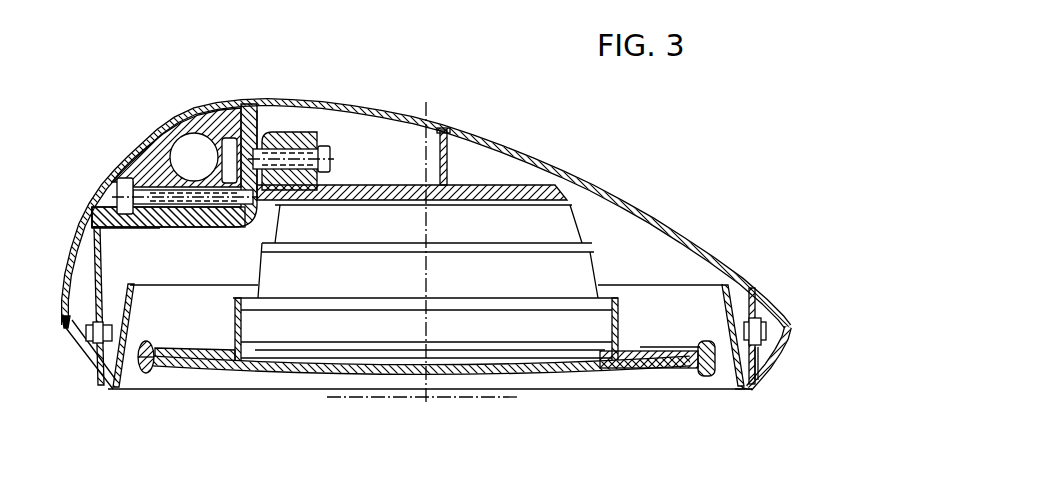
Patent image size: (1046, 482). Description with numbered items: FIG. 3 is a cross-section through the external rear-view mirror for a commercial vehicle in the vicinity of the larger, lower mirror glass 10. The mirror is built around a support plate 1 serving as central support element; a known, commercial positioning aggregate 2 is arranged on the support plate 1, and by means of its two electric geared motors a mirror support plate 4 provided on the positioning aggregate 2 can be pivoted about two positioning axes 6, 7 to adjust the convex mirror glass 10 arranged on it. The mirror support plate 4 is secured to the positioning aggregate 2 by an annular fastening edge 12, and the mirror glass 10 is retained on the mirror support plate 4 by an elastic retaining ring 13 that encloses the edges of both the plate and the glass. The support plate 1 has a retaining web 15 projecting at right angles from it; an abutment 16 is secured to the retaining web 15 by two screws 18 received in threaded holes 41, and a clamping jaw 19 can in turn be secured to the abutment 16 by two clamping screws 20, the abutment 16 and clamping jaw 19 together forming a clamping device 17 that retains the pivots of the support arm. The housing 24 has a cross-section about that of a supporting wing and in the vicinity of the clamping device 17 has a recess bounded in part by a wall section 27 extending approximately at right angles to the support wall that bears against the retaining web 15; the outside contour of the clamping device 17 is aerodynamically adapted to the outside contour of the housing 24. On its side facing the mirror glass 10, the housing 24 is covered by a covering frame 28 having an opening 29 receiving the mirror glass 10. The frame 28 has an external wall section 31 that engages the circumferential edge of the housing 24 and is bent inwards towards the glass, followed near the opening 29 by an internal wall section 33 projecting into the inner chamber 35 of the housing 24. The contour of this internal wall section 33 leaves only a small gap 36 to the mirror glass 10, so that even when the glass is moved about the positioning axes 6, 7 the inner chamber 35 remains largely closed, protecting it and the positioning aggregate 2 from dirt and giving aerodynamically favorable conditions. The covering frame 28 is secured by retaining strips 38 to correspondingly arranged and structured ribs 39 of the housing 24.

The support plate 1 is at (487, 192).
The positioning aggregate 2 is at (525, 289).
The mirror support plate 4 is at (685, 355).
The positioning axis 6 is at (427, 397).
The positioning axis 7 is at (393, 397).
The mirror glass 10 is at (575, 363).
The annular fastening edge 12 is at (238, 307).
The elastic retaining ring 13 is at (145, 382).
The retaining web 15 is at (267, 142).
The abutment 16 is at (222, 108).
The clamping device 17 is at (189, 113).
The screw 18 is at (230, 150).
The clamping jaw 19 is at (157, 153).
The clamping screw 20 is at (120, 192).
The housing 24 is at (626, 186).
The wall section 27 is at (150, 222).
The covering frame 28 is at (754, 396).
The opening 29 is at (268, 380).
The external wall section 31 is at (773, 352).
The internal wall section 33 is at (732, 365).
The inner chamber 35 is at (655, 258).
The gap 36 is at (132, 353).
The retaining strip 38 is at (765, 372).
The rib 39 is at (762, 297).
The threaded hole 41 is at (297, 147).